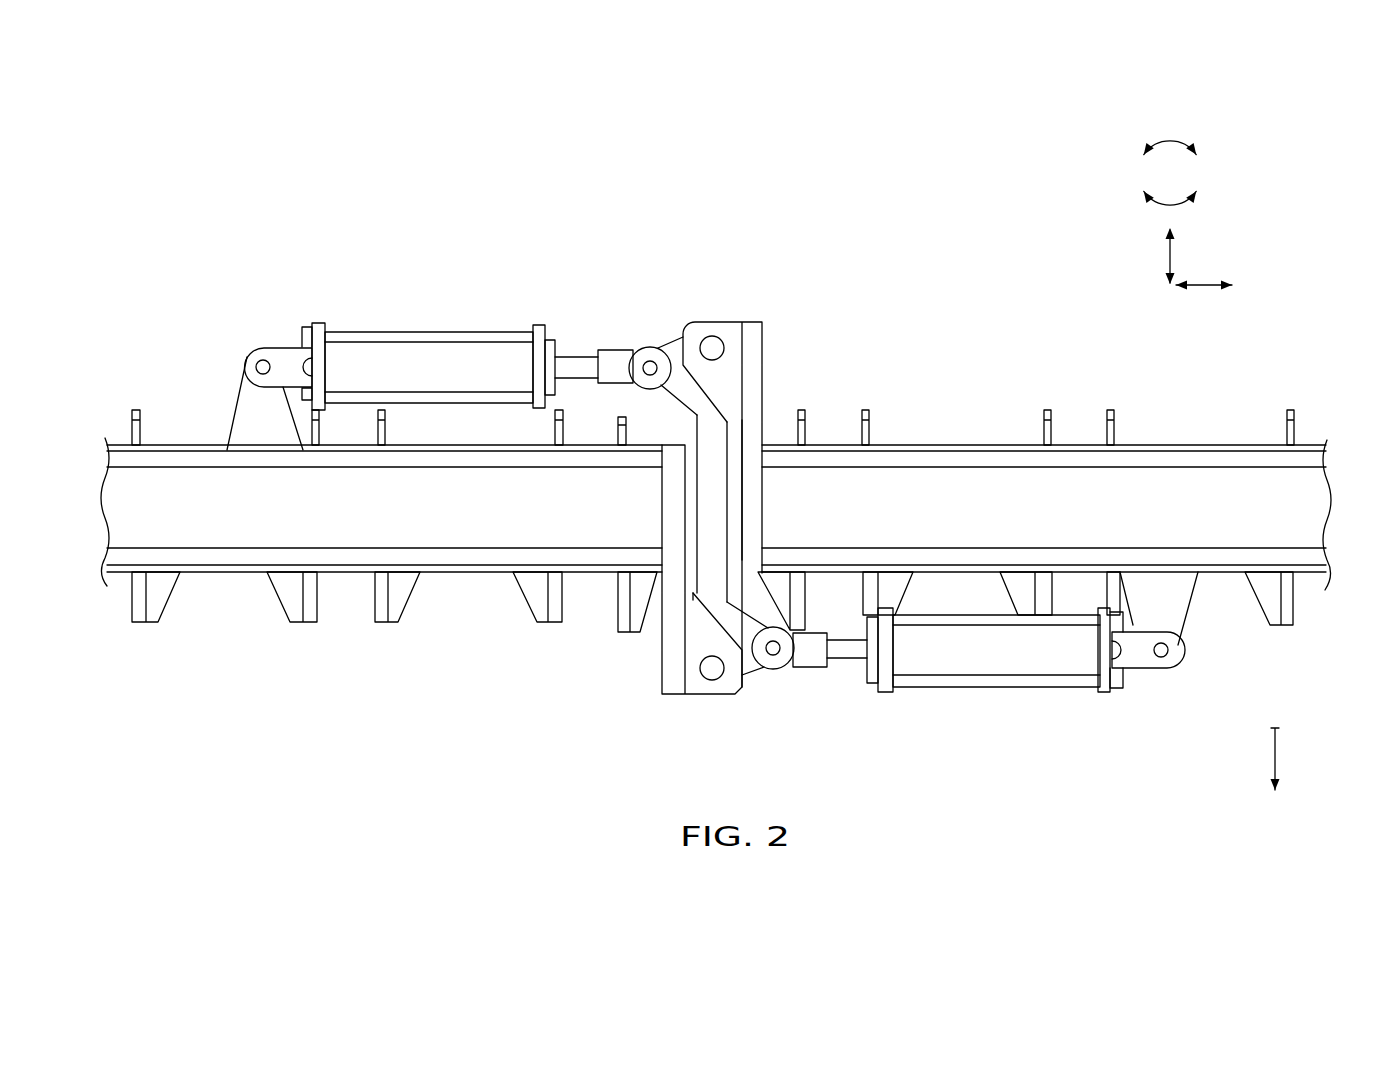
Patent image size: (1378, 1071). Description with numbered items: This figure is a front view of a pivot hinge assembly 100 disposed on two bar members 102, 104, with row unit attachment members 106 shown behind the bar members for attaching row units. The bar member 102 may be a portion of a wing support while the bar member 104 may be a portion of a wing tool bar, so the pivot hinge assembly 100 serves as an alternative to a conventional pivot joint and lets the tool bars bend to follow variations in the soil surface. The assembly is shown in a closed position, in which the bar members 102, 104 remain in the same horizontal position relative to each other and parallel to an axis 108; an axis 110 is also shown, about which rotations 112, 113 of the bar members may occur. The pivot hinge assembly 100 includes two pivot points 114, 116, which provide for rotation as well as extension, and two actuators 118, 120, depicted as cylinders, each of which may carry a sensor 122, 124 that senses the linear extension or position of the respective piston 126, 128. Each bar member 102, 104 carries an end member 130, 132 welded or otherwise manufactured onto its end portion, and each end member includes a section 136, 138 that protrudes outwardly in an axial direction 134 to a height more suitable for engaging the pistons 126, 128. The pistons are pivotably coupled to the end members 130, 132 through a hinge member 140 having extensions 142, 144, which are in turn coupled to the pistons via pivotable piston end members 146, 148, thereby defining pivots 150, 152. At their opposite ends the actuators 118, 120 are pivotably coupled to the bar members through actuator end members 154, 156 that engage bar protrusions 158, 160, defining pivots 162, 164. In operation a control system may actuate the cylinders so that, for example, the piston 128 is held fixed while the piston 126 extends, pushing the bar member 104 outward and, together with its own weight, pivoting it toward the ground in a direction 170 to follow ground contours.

The pivot hinge assembly 100 is at (760, 260).
The bar member 102 is at (364, 522).
The bar member 104 is at (1014, 520).
The attachment members 106 is at (1047, 410).
The axis 108 is at (1202, 284).
The axis 110 is at (1170, 285).
The rotation 112 is at (1186, 145).
The rotation 113 is at (1188, 199).
The pivot point 114 is at (716, 348).
The pivot point 116 is at (712, 674).
The actuator 118 is at (467, 338).
The actuator 120 is at (958, 682).
The sensor 122 is at (483, 342).
The sensor 124 is at (932, 689).
The piston 126 is at (578, 356).
The piston 128 is at (850, 662).
The end member 130 is at (690, 618).
The end member 132 is at (742, 425).
The axial direction 134 is at (1168, 262).
The section 136 is at (790, 500).
The section 138 is at (640, 595).
The hinge member 140 is at (692, 520).
The extension 142 is at (635, 328).
The extension 144 is at (752, 676).
The piston end member 146 is at (668, 343).
The piston end member 148 is at (788, 700).
The pivot 150 is at (646, 366).
The pivot 152 is at (776, 652).
The actuator end member 154 is at (268, 330).
The actuator end member 156 is at (1171, 680).
The bar protrusion 158 is at (243, 405).
The bar protrusion 160 is at (1180, 600).
The pivot 162 is at (262, 366).
The pivot 164 is at (1166, 651).
The direction 170 is at (1278, 729).